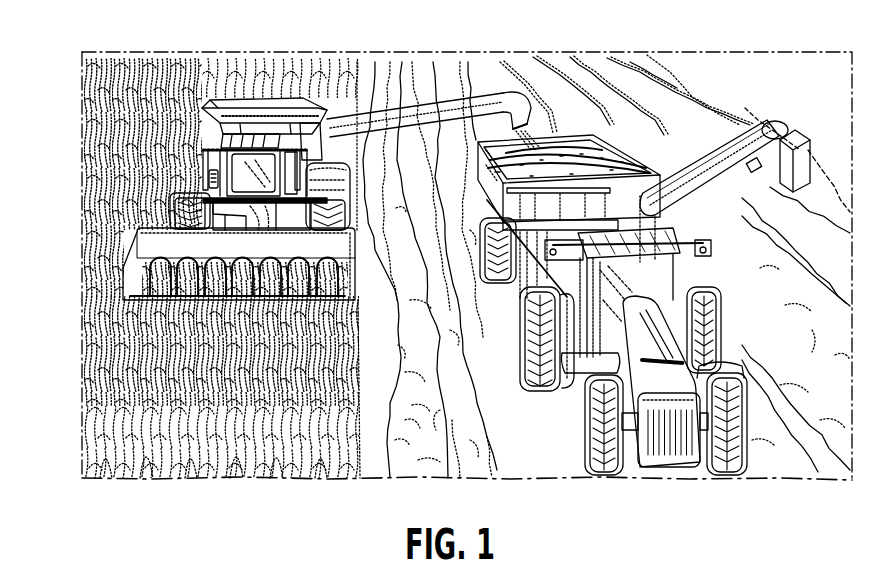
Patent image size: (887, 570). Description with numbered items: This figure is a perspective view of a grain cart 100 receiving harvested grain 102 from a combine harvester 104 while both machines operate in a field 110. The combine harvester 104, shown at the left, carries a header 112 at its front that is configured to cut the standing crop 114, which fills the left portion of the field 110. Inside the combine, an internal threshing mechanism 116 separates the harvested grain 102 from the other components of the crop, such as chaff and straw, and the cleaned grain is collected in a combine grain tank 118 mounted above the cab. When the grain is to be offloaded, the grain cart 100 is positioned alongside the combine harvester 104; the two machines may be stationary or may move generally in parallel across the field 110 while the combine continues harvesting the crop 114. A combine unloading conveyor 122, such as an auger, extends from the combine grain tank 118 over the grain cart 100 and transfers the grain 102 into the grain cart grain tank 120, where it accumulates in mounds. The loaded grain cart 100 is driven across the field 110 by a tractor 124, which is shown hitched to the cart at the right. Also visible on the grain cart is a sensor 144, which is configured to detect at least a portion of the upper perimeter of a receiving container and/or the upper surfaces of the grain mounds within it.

The grain cart 100 is at (644, 246).
The harvested grain 102 is at (569, 158).
The combine harvester 104 is at (208, 178).
The field 110 is at (285, 157).
The header 112 is at (138, 242).
The crop 114 is at (152, 363).
The internal threshing mechanism 116 is at (225, 216).
The combine grain tank 118 is at (232, 109).
The grain cart grain tank 120 is at (597, 160).
The combine unloading conveyor 122 is at (462, 104).
The tractor 124 is at (725, 348).
The sensor 144 is at (751, 165).